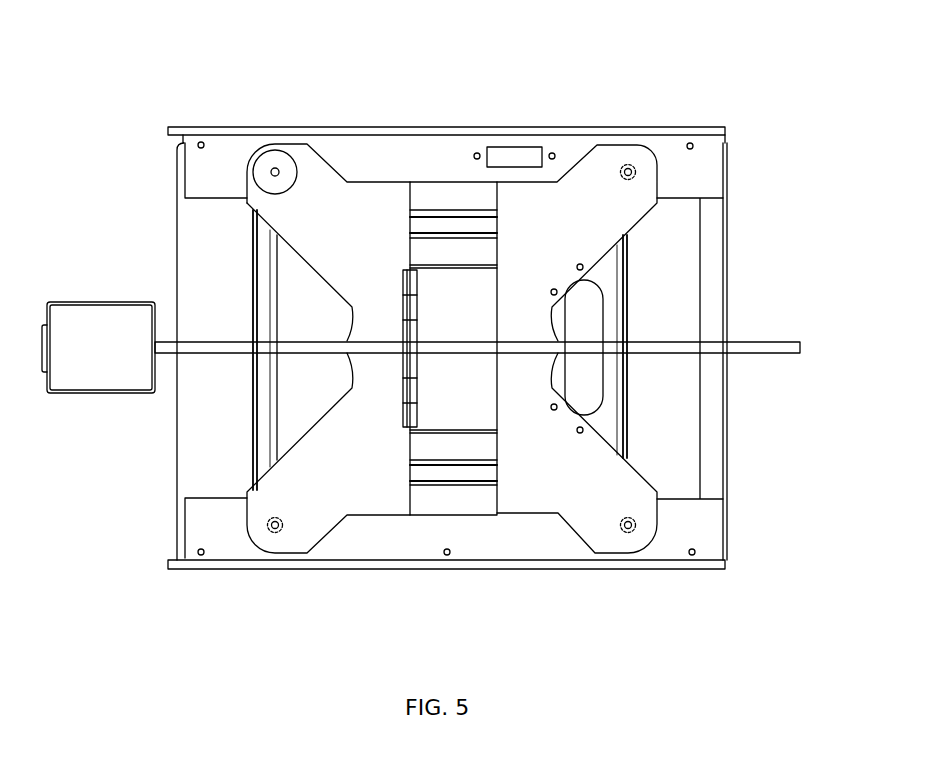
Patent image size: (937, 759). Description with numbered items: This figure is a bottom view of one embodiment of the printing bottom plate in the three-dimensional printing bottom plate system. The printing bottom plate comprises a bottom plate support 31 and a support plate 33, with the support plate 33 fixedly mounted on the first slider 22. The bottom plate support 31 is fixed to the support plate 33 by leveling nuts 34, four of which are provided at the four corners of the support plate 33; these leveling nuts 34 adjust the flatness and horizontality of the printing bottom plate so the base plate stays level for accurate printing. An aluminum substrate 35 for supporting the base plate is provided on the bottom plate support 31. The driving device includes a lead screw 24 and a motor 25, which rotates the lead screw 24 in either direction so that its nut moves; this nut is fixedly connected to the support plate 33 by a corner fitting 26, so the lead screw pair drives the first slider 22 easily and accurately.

The first slider 22 is at (437, 198).
The lead screw 24 is at (752, 350).
The motor 25 is at (90, 373).
The corner fitting 26 is at (405, 420).
The bottom plate support 31 is at (677, 528).
The support plate 33 is at (353, 440).
The leveling nut 34 is at (628, 165).
The aluminum substrate 35 is at (190, 420).